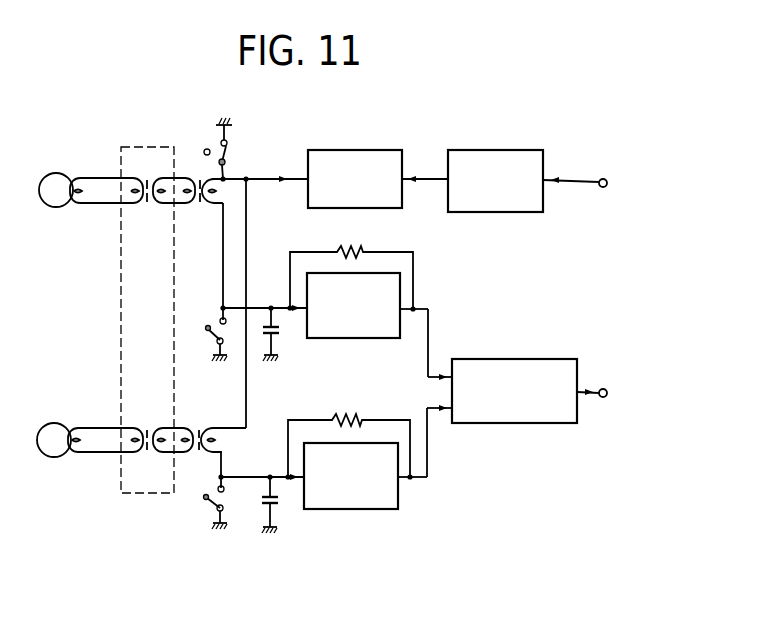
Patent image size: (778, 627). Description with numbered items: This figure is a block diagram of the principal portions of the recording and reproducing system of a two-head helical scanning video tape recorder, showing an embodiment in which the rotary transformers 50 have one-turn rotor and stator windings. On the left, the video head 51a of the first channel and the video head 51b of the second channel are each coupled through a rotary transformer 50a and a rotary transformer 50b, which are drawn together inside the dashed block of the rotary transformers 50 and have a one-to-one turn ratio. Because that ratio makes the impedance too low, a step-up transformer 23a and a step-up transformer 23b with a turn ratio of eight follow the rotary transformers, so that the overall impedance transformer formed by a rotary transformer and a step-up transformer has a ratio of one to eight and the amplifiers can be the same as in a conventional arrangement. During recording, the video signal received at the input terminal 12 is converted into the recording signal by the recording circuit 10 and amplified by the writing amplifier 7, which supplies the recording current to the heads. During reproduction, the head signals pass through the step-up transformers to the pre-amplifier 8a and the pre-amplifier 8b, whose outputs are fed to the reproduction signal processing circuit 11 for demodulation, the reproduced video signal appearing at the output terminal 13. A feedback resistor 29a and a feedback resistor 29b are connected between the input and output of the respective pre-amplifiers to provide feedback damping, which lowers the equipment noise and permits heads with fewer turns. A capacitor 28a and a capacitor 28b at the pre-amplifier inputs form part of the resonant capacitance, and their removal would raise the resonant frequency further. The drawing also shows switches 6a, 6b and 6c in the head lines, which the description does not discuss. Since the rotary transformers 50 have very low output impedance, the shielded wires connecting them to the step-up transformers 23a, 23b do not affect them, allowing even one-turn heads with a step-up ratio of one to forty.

The rotary transformers 50 is at (147, 147).
The rotary transformer 50a is at (133, 207).
The rotary transformer 50b is at (145, 423).
The video head 51a is at (60, 207).
The video head 51b is at (58, 460).
The step-up transformer 23a is at (200, 205).
The step-up transformer 23b is at (200, 428).
The switch 6a is at (229, 153).
The switch 6b is at (205, 345).
The switch 6c is at (205, 507).
The writing amplifier 7 is at (368, 148).
The recording circuit 10 is at (515, 150).
The reproduction signal processing circuit 11 is at (517, 359).
The input terminal 12 is at (607, 178).
The output terminal 13 is at (607, 386).
The pre-amplifier 8a is at (363, 340).
The pre-amplifier 8b is at (368, 509).
The capacitor 28a is at (262, 337).
The capacitor 28b is at (260, 510).
The feedback resistor 29a is at (363, 247).
The feedback resistor 29b is at (355, 422).